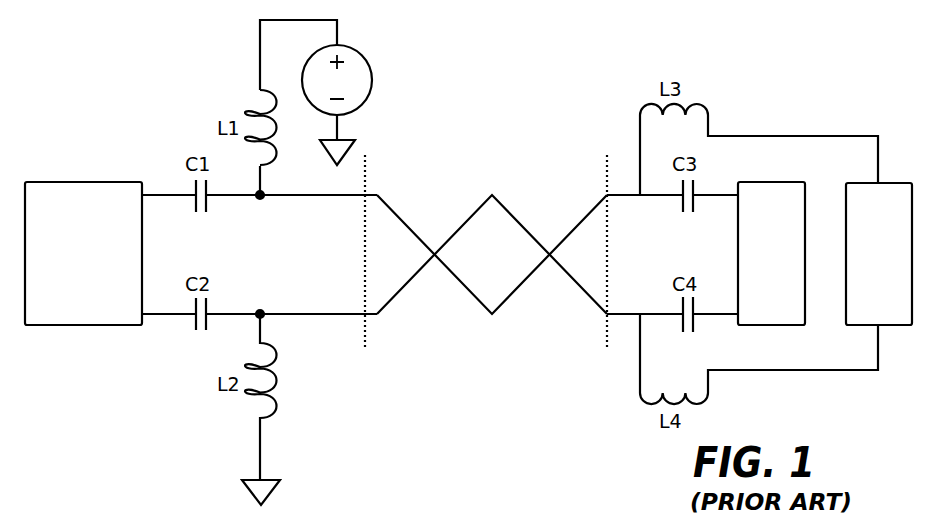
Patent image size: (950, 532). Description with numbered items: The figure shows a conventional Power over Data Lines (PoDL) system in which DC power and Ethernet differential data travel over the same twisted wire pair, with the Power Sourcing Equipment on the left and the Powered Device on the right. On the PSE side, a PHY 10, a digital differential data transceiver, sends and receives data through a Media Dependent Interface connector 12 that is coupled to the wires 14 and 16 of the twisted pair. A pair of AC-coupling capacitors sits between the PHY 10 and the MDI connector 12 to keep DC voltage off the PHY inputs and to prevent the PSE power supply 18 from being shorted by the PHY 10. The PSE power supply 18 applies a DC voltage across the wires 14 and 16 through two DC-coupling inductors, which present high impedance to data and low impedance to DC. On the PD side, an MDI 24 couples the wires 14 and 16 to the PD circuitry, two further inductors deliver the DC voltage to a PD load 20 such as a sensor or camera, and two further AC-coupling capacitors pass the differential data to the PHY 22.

The PHY 10 is at (85, 181).
The Media Dependent Interface (MDI) connector 12 is at (368, 177).
The wire 14 is at (403, 222).
The wire 16 is at (403, 288).
The PSE power supply 18 is at (374, 84).
The PD load 20 is at (893, 182).
The PHY 22 is at (770, 181).
The MDI 24 is at (606, 334).